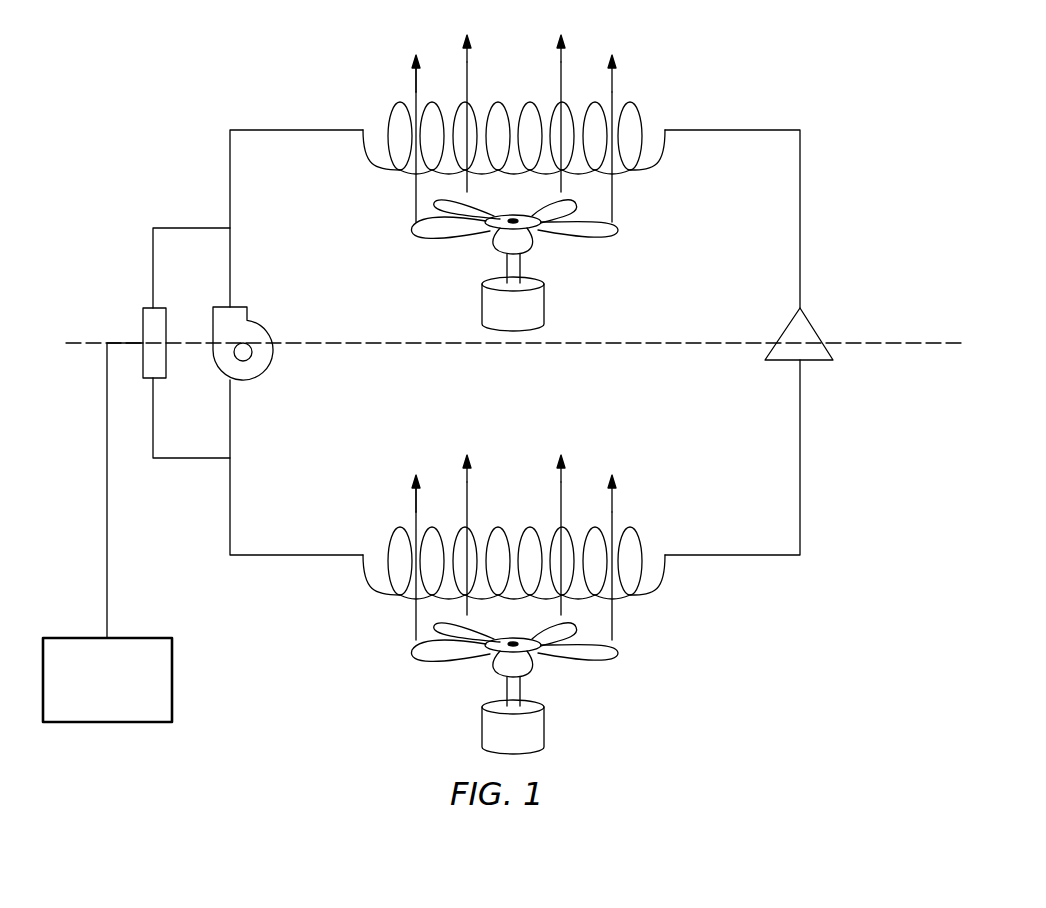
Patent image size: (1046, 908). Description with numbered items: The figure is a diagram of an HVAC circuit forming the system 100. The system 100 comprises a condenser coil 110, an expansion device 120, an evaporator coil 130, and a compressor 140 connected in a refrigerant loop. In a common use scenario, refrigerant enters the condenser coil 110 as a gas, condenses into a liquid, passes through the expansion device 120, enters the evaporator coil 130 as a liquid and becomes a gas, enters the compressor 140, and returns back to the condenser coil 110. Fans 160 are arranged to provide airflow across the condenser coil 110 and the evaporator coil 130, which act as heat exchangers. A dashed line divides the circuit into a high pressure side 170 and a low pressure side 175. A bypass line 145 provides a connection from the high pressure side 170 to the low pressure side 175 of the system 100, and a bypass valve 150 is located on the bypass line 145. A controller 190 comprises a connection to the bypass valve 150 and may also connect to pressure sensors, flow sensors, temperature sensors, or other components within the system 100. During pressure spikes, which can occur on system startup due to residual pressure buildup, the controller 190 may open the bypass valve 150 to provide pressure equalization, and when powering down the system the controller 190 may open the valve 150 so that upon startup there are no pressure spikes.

The system 100 is at (820, 663).
The condenser coil 110 is at (578, 91).
The expansion device 120 is at (820, 362).
The evaporator coil 130 is at (535, 608).
The compressor 140 is at (270, 370).
The bypass line 145 is at (153, 206).
The bypass valve 150 is at (143, 323).
The fans 160 is at (545, 293).
The high pressure side 170 is at (936, 247).
The low pressure side 175 is at (936, 465).
The controller 190 is at (124, 692).